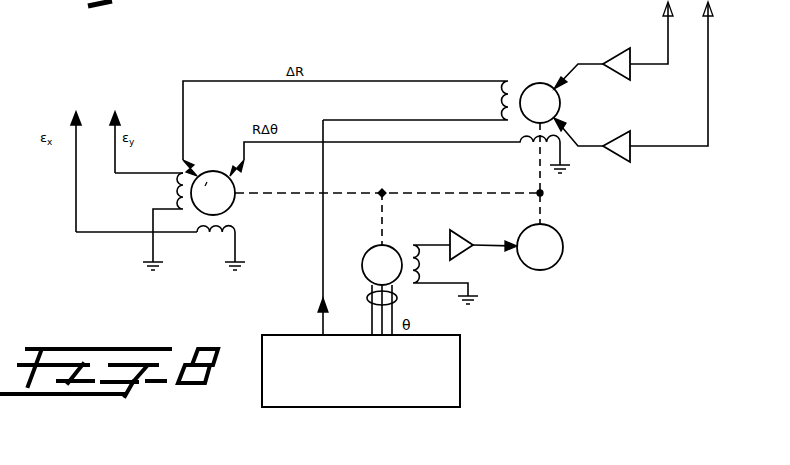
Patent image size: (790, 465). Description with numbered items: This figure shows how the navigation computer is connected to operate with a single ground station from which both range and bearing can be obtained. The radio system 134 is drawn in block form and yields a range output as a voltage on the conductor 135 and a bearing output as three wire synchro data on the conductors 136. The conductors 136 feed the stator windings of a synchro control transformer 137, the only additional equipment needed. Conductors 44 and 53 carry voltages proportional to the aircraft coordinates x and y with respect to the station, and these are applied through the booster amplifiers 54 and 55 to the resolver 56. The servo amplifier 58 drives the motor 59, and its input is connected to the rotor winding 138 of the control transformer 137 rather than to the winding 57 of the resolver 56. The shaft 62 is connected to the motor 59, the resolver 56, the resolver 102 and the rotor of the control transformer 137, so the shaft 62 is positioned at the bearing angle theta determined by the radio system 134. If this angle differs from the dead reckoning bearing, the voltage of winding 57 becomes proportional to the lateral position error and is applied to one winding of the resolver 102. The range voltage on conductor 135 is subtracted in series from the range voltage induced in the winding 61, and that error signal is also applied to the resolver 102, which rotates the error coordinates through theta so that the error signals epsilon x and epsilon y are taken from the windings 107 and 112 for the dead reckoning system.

The conductor 44 is at (668, 34).
The conductor 53 is at (708, 53).
The booster amplifier 54 is at (615, 52).
The booster amplifier 55 is at (620, 135).
The resolver 56 is at (560, 103).
The winding 57 is at (524, 150).
The servo amplifier 58 is at (462, 237).
The motor 59 is at (558, 231).
The winding 61 is at (508, 82).
The shaft 62 is at (478, 193).
The resolver 102 is at (229, 208).
The winding 107 is at (211, 238).
The winding 112 is at (177, 194).
The radio system 134 is at (460, 352).
The conductor 135 is at (323, 269).
The conductors 136 is at (397, 298).
The synchro control transformer 137 is at (372, 249).
The rotor winding 138 is at (419, 265).